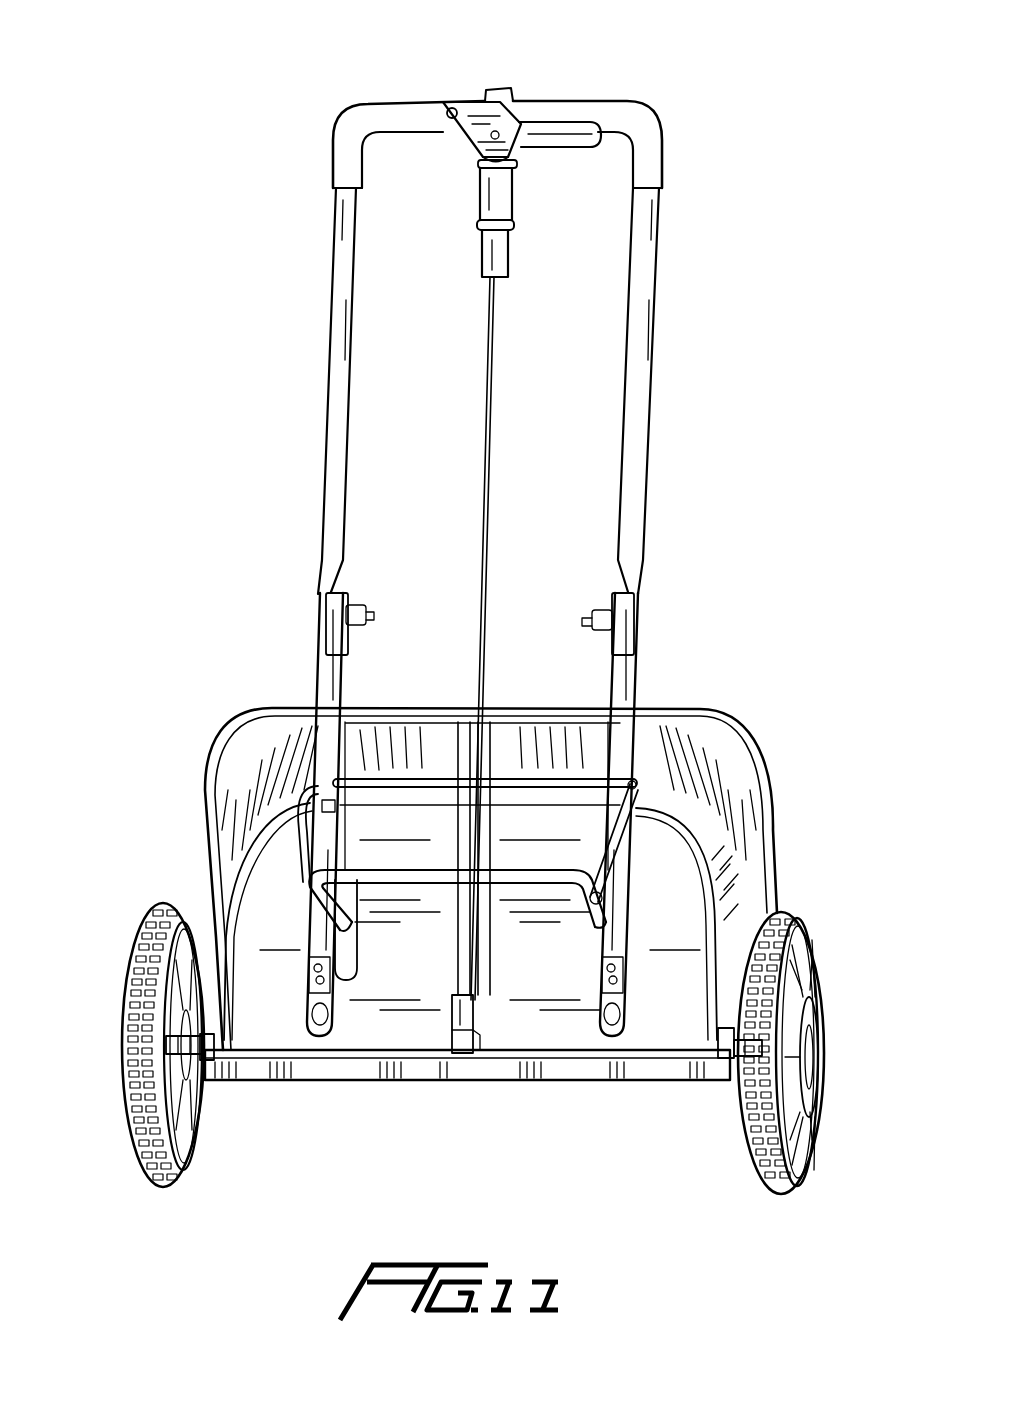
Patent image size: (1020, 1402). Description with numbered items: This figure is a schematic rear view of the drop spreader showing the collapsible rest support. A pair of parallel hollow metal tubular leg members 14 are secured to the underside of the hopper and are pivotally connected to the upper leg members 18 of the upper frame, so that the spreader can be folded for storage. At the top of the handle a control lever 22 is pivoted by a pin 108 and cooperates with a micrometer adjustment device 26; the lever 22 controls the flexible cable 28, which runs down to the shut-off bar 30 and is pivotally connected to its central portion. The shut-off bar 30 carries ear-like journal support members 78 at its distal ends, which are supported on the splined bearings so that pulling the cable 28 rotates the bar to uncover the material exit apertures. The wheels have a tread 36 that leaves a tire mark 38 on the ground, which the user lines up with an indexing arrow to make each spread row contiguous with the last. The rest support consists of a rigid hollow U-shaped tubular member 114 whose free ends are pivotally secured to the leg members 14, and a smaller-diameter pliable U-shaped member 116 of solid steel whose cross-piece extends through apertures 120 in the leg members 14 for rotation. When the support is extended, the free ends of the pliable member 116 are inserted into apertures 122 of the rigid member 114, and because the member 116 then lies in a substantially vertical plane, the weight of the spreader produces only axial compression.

The tubular leg members 14 is at (333, 668).
The upper leg members 18 is at (333, 350).
The control lever 22 is at (585, 135).
The adjustment device 26 is at (480, 203).
The flexible cable 28 is at (487, 408).
The shut-off bar 30 is at (380, 1075).
The tread 36 is at (800, 1148).
The tire mark 38 is at (760, 915).
The journal support members 78 is at (185, 1045).
The pin 108 is at (452, 108).
The rigid U-shaped tubular member 114 is at (525, 880).
The pliable U-shaped tubular member 116 is at (405, 778).
The apertures 120 is at (310, 795).
The apertures 122 is at (602, 905).